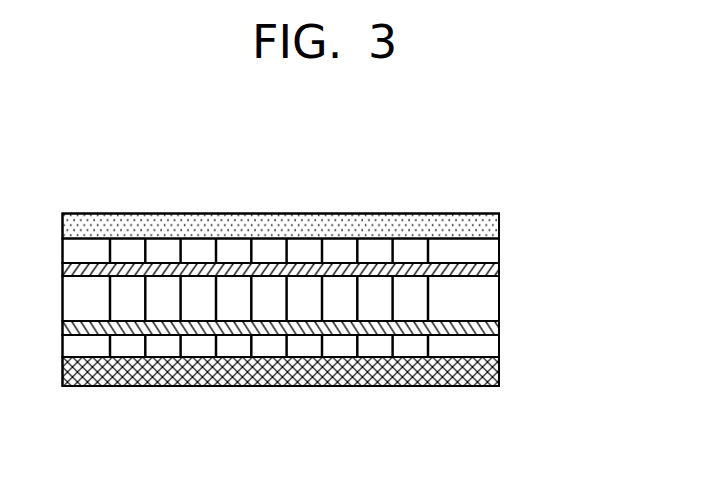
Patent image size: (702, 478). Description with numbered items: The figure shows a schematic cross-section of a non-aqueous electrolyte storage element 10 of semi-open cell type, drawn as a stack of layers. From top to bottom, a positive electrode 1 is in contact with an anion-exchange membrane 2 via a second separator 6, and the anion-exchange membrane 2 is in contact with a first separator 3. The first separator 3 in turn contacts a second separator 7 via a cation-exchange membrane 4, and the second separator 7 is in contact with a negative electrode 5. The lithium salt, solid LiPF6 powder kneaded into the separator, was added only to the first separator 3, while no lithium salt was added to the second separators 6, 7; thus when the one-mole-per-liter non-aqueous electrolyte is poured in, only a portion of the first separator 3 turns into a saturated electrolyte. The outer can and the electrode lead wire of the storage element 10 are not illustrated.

The non-aqueous electrolyte storage element 10 is at (400, 183).
The positive electrode 1 is at (500, 222).
The second separator 6 is at (494, 250).
The anion-exchange membrane 2 is at (497, 270).
The first separator 3 is at (494, 299).
The cation-exchange membrane 4 is at (497, 326).
The second separator 7 is at (495, 349).
The negative electrode 5 is at (497, 382).